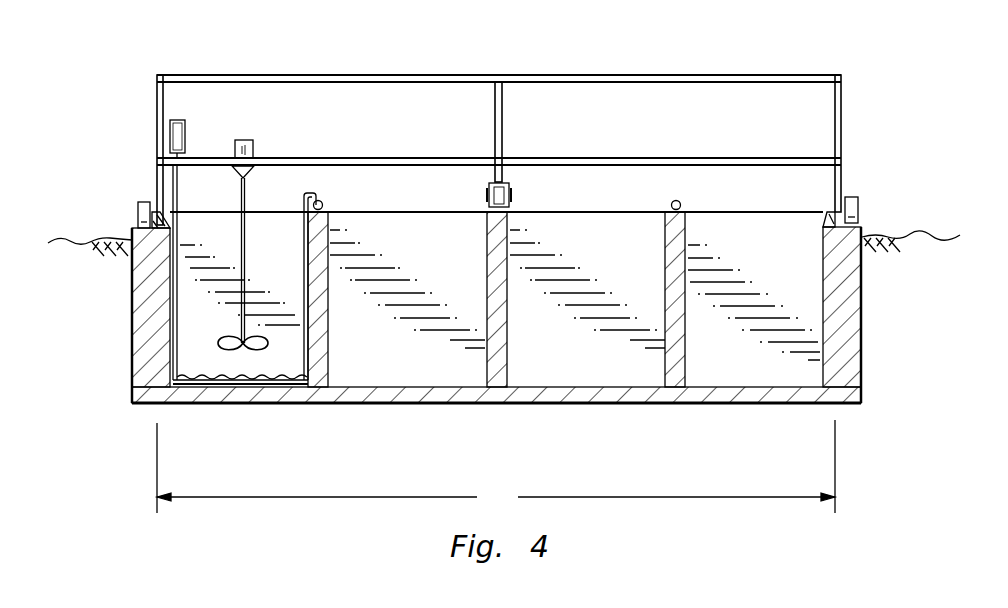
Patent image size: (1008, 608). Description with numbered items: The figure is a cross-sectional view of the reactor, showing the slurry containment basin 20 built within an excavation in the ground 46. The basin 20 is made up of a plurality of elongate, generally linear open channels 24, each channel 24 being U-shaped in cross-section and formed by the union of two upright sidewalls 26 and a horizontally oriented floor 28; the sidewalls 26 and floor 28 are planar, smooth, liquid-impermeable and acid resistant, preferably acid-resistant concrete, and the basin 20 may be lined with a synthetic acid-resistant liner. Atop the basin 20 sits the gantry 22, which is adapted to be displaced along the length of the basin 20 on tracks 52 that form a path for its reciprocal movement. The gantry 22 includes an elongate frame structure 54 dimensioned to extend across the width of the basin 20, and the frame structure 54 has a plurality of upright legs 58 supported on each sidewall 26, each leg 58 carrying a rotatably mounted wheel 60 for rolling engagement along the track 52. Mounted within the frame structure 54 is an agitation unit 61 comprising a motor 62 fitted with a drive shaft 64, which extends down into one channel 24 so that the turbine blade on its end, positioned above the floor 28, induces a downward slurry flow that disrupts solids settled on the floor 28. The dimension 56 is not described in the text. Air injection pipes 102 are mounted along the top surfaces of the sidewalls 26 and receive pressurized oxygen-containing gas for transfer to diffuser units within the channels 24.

The slurry containment basin 20 is at (382, 365).
The gantry 22 is at (352, 74).
The open channel 24 is at (224, 241).
The sidewall 26 is at (140, 320).
The floor 28 is at (535, 405).
The ground 46 is at (80, 240).
The track 52 is at (160, 193).
The frame structure 54 is at (690, 75).
The length dimension 56 is at (496, 466).
The upright leg 58 is at (163, 100).
The wheel 60 is at (138, 211).
The agitation unit 61 is at (252, 151).
The motor 62 is at (242, 140).
The drive shaft 64 is at (279, 241).
The pipe 102 is at (325, 205).